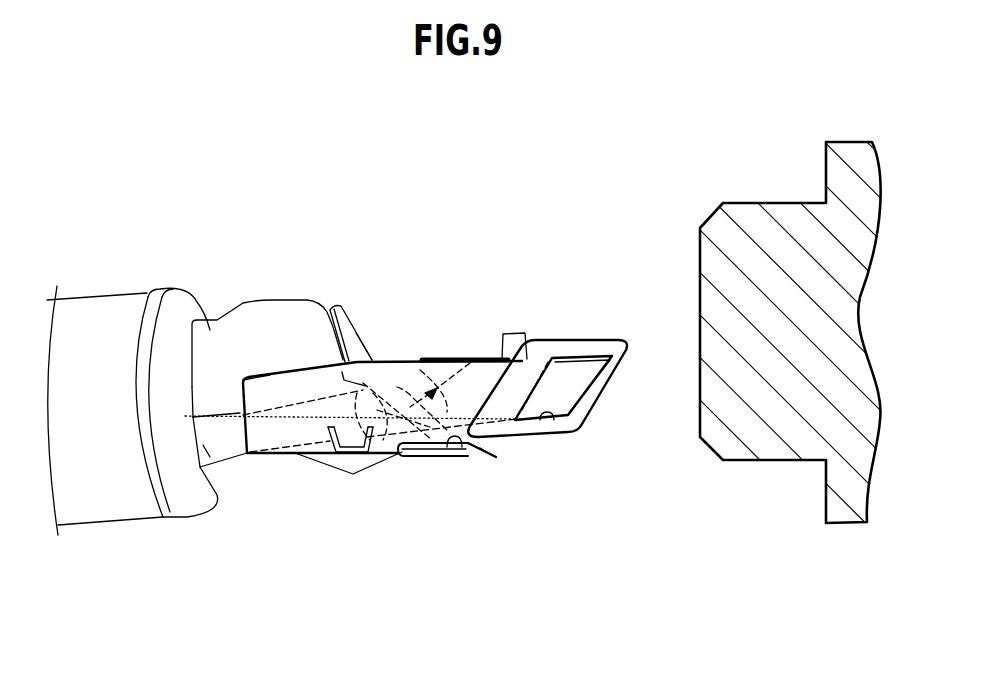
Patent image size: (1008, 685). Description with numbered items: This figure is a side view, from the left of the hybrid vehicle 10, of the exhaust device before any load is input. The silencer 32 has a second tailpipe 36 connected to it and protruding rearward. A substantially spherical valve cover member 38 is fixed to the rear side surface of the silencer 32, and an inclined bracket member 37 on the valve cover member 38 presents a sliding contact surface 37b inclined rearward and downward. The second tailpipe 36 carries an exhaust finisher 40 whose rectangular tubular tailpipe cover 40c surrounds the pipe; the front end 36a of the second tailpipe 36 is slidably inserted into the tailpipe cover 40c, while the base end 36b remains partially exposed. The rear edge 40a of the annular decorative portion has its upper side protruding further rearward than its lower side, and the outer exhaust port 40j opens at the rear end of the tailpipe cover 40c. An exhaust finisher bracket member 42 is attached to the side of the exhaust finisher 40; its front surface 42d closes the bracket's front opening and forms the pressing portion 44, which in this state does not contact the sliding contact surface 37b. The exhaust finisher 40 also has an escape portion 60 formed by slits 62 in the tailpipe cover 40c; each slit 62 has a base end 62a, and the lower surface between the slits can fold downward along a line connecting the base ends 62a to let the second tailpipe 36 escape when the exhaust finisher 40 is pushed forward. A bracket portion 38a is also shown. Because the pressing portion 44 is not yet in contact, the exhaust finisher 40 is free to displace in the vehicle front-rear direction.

The hybrid vehicle 10 is at (492, 184).
The silencer 32 is at (161, 281).
The second tailpipe 36 is at (240, 465).
The front end of the second tailpipe 36a is at (347, 457).
The base end of the second tailpipe 36b is at (204, 462).
The inclined bracket member 37 is at (338, 296).
The sliding contact surface 37b is at (363, 345).
The valve cover member 38 is at (283, 302).
The housing lower bracket 38a is at (378, 468).
The exhaust finisher 40 is at (432, 382).
The rear edge of the annular decorative portion 40a is at (627, 340).
The tailpipe cover 40c is at (283, 397).
The outer exhaust port 40j is at (556, 421).
The exhaust finisher bracket member 42 is at (438, 356).
The front surface 42d is at (470, 363).
The pressing portion 44 is at (397, 378).
The escape portion 60 is at (479, 505).
The slit 62 is at (466, 459).
The base end of the slit 62a is at (520, 471).